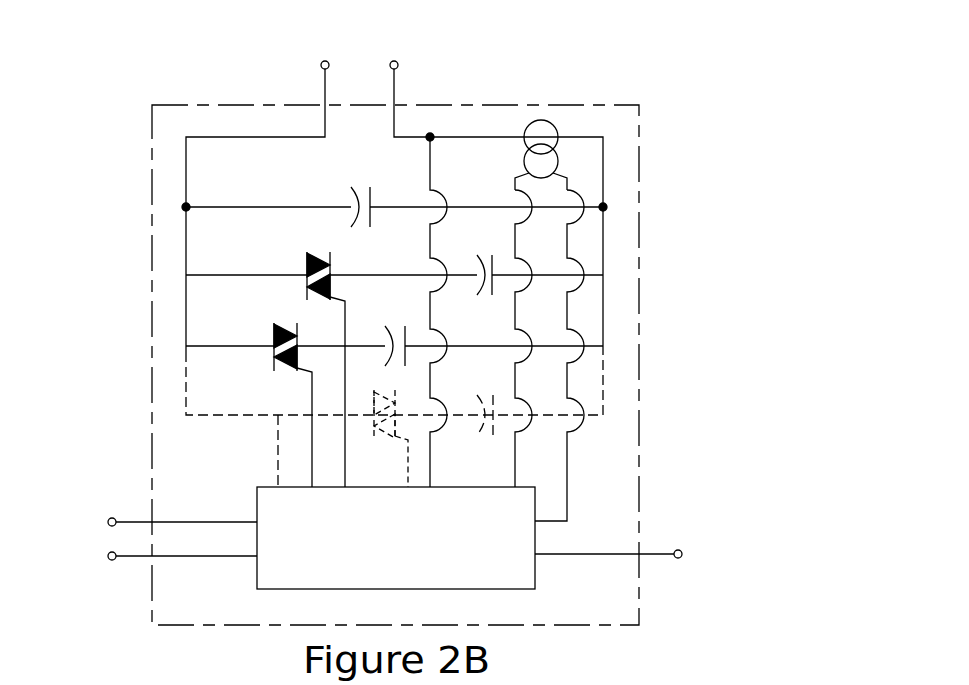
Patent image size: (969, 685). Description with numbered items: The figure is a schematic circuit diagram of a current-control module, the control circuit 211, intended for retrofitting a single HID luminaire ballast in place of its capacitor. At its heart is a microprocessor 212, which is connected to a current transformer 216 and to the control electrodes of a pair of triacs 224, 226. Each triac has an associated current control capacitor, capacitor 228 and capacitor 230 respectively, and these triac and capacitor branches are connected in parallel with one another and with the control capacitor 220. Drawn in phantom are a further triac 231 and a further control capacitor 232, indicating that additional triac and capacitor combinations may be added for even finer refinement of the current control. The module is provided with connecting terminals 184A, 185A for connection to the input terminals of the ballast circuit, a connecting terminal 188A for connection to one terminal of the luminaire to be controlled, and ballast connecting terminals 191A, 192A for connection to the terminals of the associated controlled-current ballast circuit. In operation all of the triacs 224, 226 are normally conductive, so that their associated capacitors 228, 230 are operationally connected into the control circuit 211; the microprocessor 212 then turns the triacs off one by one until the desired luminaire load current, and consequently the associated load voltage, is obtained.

The ballast connecting terminal 191A is at (269, 191).
The ballast connecting terminal 192A is at (490, 188).
The current transformer 216 is at (553, 123).
The control circuit 211 is at (640, 166).
The control capacitor 220 is at (362, 187).
The triac 226 is at (320, 255).
The triac 224 is at (288, 325).
The current control capacitor 230 is at (397, 326).
The current control capacitor 228 is at (494, 231).
The triac 231 is at (392, 440).
The control capacitor 232 is at (485, 435).
The connecting terminal 185A is at (150, 515).
The connecting terminal 184A is at (150, 559).
The connecting terminal 188A is at (645, 555).
The microprocessor 212 is at (525, 573).